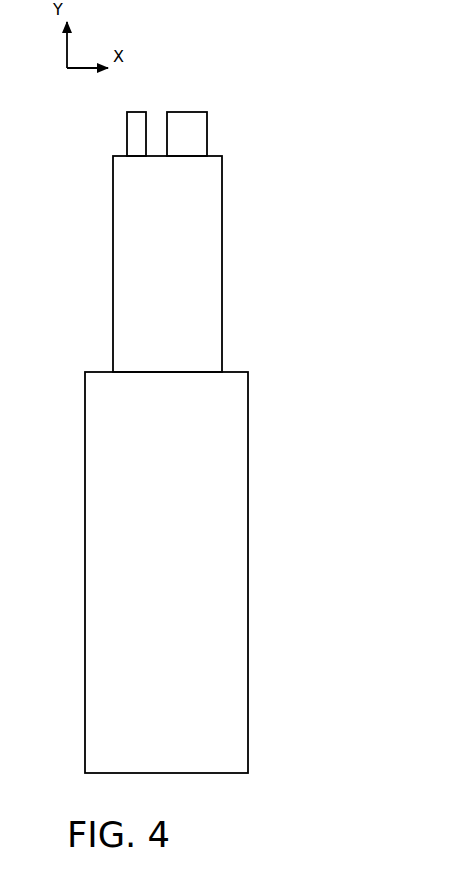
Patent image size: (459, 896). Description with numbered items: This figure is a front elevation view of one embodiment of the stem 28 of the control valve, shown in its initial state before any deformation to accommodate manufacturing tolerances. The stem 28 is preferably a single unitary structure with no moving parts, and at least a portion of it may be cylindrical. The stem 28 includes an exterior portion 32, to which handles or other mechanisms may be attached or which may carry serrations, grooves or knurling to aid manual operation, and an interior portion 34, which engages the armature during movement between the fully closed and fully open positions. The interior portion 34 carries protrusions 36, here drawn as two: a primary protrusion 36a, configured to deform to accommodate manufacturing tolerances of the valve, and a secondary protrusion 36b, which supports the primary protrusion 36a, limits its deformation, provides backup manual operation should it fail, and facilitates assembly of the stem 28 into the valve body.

The stem 28 is at (222, 485).
The exterior portion 32 is at (269, 791).
The interior portion 34 is at (301, 62).
The protrusions 36 is at (261, 127).
The primary protrusion 36a is at (136, 126).
The secondary protrusion 36b is at (192, 118).